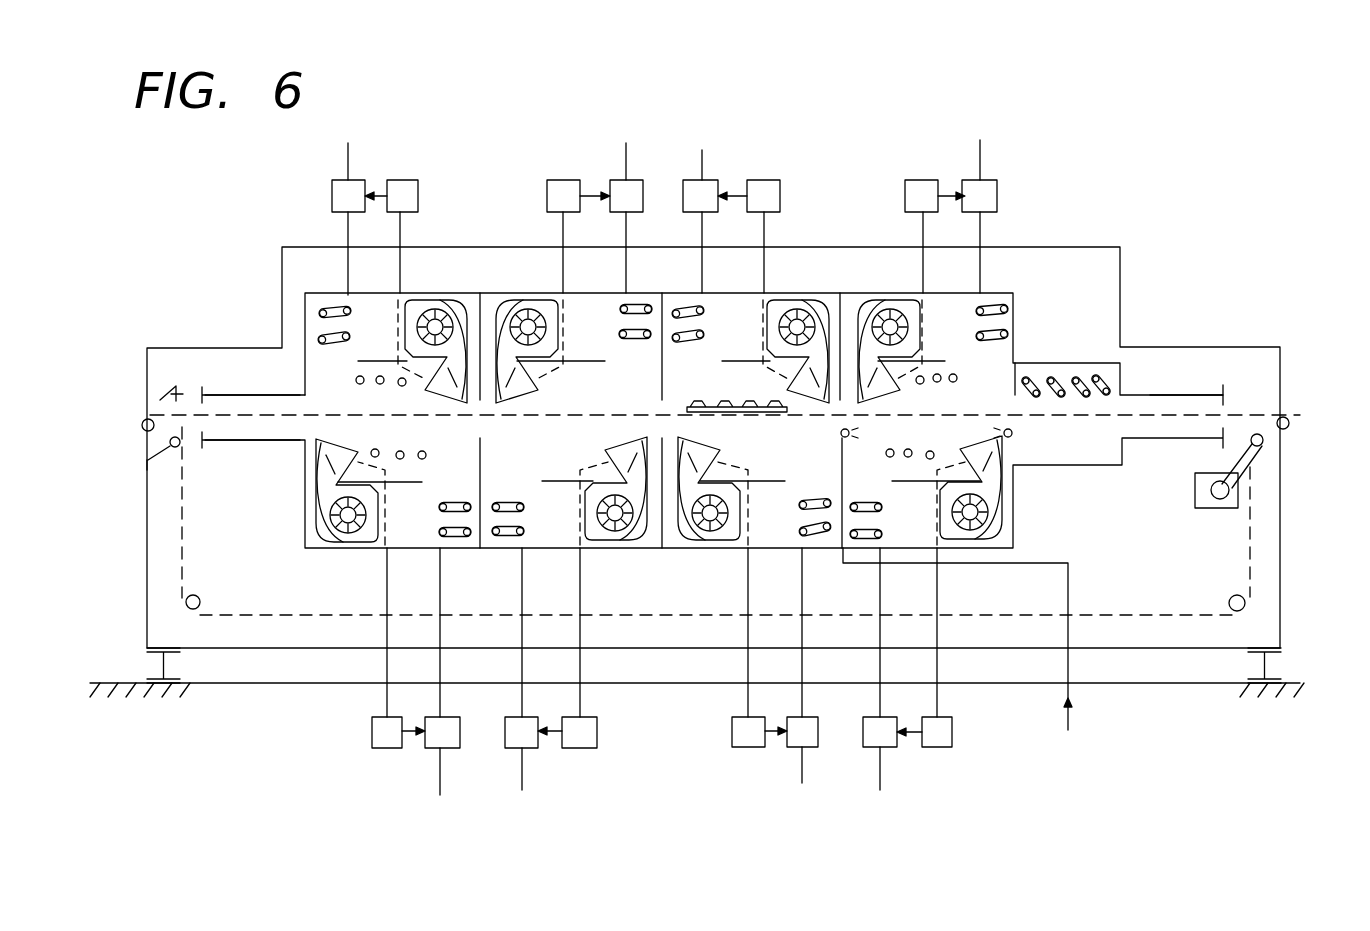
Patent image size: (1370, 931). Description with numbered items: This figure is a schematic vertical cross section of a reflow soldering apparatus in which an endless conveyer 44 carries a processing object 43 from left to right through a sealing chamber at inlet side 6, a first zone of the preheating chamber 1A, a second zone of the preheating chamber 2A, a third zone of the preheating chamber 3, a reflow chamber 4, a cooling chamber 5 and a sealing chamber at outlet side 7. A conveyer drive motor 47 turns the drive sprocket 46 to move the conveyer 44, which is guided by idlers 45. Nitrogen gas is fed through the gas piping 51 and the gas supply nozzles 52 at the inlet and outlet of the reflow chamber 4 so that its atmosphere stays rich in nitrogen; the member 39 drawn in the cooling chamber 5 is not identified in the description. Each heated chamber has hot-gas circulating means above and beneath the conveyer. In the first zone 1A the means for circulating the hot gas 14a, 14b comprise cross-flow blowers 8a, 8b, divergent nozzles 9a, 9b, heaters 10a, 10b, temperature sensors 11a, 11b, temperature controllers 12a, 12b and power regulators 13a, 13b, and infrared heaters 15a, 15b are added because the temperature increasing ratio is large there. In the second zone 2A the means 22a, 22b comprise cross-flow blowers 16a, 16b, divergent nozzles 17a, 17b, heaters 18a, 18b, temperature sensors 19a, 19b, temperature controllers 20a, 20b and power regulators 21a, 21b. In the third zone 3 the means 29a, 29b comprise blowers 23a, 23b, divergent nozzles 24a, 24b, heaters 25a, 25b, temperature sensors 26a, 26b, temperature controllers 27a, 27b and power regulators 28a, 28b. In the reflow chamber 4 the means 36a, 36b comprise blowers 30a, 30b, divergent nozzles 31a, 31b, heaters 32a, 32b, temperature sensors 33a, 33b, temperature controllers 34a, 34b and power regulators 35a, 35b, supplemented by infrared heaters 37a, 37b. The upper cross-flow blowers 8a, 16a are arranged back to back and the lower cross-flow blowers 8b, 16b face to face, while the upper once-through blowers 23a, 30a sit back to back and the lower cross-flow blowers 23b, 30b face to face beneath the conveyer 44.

The first zone of the preheating chamber 1A is at (305, 293).
The second zone of the preheating chamber 2A is at (490, 296).
The third zone of the preheating chamber 3 is at (828, 294).
The reflow chamber 4 is at (1013, 300).
The cooling chamber 5 is at (1072, 363).
The sealing chamber at inlet side 6 is at (237, 394).
The sealing chamber at outlet side 7 is at (1185, 395).
The cross-flow blower 8a is at (437, 297).
The cross-flow blower 8b is at (346, 540).
The divergent nozzle 9a is at (464, 298).
The divergent nozzle 9b is at (333, 548).
The heater 10a is at (355, 308).
The heater 10b is at (440, 534).
The temperature sensor 11a is at (400, 325).
The temperature sensor 11b is at (388, 575).
The temperature controller 12a is at (400, 178).
The temperature controller 12b is at (388, 715).
The power regulator 13a is at (352, 178).
The power regulator 13b is at (446, 715).
The means for circulating the hot gas 14a is at (487, 140).
The means for circulating the hot gas 14b is at (480, 687).
The infrared heater 15a is at (381, 385).
The infrared heater 15b is at (376, 452).
The cross-flow blower 16a is at (528, 308).
The cross-flow blower 16b is at (613, 548).
The divergent nozzle 17a is at (499, 298).
The divergent nozzle 17b is at (650, 548).
The heater 18a is at (652, 307).
The heater 18b is at (494, 538).
The temperature sensor 19a is at (563, 230).
The temperature sensor 19b is at (580, 638).
The temperature controller 20a is at (579, 178).
The temperature controller 20b is at (586, 750).
The power regulator 21a is at (620, 178).
The power regulator 21b is at (526, 750).
The means for circulating the hot gas 22a is at (512, 93).
The means for circulating the hot gas 22b is at (490, 800).
The once-through blower 23a is at (800, 298).
The cross-flow blower 23b is at (720, 548).
The divergent nozzle 24a is at (838, 310).
The divergent nozzle 24b is at (692, 548).
The heater 25a is at (771, 300).
The heater 25b is at (820, 540).
The temperature sensor 26a is at (764, 232).
The temperature sensor 26b is at (750, 640).
The temperature controller 27a is at (764, 178).
The temperature controller 27b is at (750, 750).
The power regulator 28a is at (706, 166).
The power regulator 28b is at (802, 785).
The means for circulating the hot gas 29a is at (713, 112).
The means for circulating the hot gas 29b is at (703, 833).
The once-through blower 30a is at (925, 176).
The cross-flow blower 30b is at (972, 548).
The divergent nozzle 31a is at (892, 298).
The divergent nozzle 31b is at (1007, 548).
The heater 32a is at (1008, 298).
The heater 32b is at (853, 540).
The temperature sensor 33a is at (923, 265).
The temperature sensor 33b is at (937, 640).
The temperature controller 34a is at (980, 176).
The temperature controller 34b is at (938, 750).
The power regulator 35a is at (998, 178).
The power regulator 35b is at (882, 750).
The means for circulating the hot gas 36a is at (903, 93).
The means for circulating the hot gas 36b is at (1048, 818).
The infrared heater 37a is at (955, 382).
The infrared heater 37b is at (933, 453).
The cooling nozzles 39 is at (1105, 382).
The processing object 43 is at (745, 403).
The endless conveyer 44 is at (265, 440).
The idler 45 is at (143, 430).
The drive sprocket 46 is at (1263, 445).
The conveyer drive motor 47 is at (1212, 508).
The gas piping 51 is at (1068, 565).
The gas supply nozzle 52 is at (1015, 433).